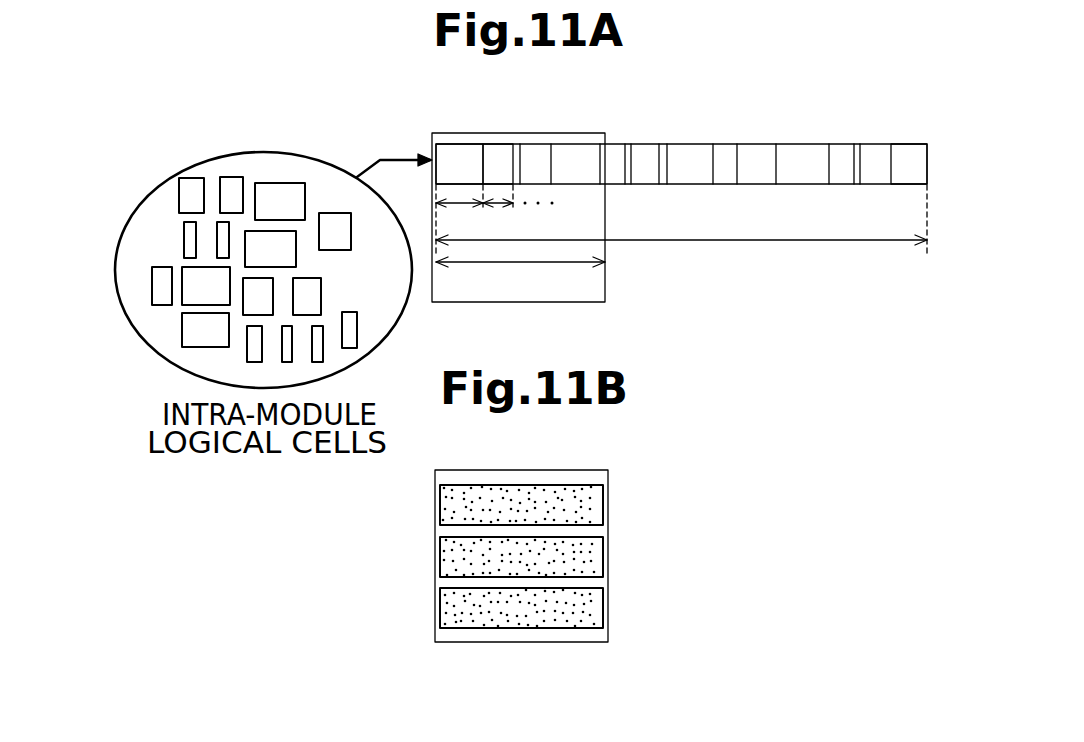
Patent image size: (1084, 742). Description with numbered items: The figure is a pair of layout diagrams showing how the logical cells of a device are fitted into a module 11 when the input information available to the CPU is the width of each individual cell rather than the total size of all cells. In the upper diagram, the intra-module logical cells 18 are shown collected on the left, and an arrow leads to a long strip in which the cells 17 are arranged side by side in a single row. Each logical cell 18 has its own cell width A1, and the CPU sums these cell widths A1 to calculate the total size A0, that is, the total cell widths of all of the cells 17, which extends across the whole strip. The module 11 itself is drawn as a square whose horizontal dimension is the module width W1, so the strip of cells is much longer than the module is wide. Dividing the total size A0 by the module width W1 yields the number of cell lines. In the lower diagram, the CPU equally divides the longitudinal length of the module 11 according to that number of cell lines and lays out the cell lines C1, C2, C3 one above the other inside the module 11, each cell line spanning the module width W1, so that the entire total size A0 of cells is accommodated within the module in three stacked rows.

In FIG. 11A, the logical cell 18 is at (270, 175).
In FIG. 11A, the module 11 is at (572, 133).
In FIG. 11B, the module 11 is at (572, 470).
In FIG. 11A, the cell 17 is at (900, 142).
In FIG. 11A, the cell width A1 is at (460, 207).
In FIG. 11A, the total size A0 is at (700, 240).
In FIG. 11A, the module width W1 is at (513, 263).
In FIG. 11B, the cell line C1 is at (600, 500).
In FIG. 11B, the cell line C2 is at (600, 553).
In FIG. 11B, the cell line C3 is at (600, 604).